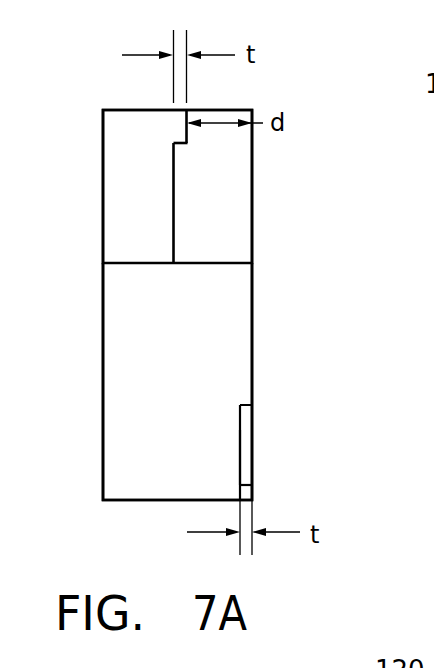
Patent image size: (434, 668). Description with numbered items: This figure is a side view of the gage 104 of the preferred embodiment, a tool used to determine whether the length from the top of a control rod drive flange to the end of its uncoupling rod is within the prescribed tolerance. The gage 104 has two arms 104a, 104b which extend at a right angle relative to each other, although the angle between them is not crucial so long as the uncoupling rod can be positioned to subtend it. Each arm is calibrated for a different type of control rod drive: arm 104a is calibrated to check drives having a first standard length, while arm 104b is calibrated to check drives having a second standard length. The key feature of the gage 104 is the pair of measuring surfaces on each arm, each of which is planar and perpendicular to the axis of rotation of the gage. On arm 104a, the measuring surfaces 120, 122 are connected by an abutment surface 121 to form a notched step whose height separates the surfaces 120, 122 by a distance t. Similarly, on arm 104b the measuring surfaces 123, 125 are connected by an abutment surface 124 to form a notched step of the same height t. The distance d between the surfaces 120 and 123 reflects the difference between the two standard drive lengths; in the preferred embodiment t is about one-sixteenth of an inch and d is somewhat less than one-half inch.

The gage 104 is at (258, 313).
The arm 104a is at (142, 122).
The arm 104b is at (137, 473).
The measuring surface 120 is at (190, 138).
The abutment surface 121 is at (178, 148).
The measuring surface 122 is at (175, 232).
The measuring surface 123 is at (253, 428).
The abutment surface 124 is at (245, 457).
The measuring surface 125 is at (253, 483).